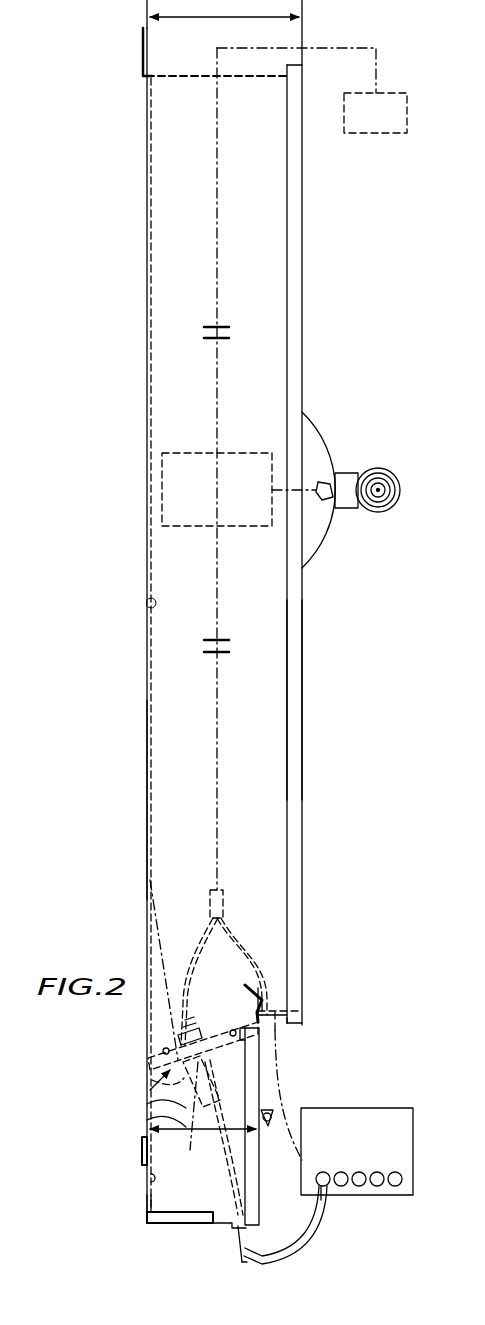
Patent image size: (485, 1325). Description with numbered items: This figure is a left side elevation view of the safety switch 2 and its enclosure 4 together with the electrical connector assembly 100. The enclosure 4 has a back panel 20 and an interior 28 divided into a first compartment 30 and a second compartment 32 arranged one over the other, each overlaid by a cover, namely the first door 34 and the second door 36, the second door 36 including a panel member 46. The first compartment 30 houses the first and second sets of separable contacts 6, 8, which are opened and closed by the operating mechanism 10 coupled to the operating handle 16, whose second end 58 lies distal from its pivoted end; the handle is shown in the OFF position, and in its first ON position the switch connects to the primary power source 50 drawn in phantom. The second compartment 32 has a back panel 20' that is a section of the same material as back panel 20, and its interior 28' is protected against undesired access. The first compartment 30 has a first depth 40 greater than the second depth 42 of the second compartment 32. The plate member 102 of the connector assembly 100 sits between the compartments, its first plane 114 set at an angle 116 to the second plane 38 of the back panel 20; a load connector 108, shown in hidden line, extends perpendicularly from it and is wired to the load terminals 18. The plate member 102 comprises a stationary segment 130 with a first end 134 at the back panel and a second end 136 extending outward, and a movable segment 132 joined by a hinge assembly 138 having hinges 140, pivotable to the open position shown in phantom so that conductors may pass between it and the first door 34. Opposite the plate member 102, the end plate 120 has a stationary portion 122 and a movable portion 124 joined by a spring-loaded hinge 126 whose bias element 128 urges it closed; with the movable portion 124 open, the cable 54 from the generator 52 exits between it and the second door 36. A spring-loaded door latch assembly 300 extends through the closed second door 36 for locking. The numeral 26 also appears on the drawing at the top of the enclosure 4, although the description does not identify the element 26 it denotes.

The safety switch 2 is at (233, 1233).
The enclosure 4 is at (316, 344).
The first set of separable contacts 6 is at (231, 311).
The second set of separable contacts 8 is at (227, 631).
The operating mechanism 10 is at (240, 452).
The operating handle 16 is at (368, 470).
The load terminals 18 is at (224, 895).
The back panel 20 is at (133, 625).
The back panel 20' is at (127, 1156).
The top wall 26 is at (213, 75).
The interior 28 is at (300, 700).
The interior 28' is at (109, 1207).
The first compartment 30 is at (165, 672).
The second compartment 32 is at (148, 1203).
The first cover 34 is at (302, 727).
The second cover 36 is at (308, 1223).
The second plane 38 is at (147, 776).
The first depth 40 is at (211, 20).
The second depth 42 is at (147, 1129).
The panel member 46 is at (260, 1100).
The primary power source 50 is at (409, 113).
The generator 52 is at (403, 1108).
The cable 54 is at (284, 1108).
The second end 58 is at (380, 520).
The electrical connector assembly 100 is at (240, 1062).
The plate member 102 is at (150, 1100).
The load connector 108 is at (190, 1116).
The first plane 114 is at (152, 1060).
The angle 116 is at (147, 1108).
The end plate 120 is at (166, 1225).
The stationary portion 122 is at (185, 1212).
The movable portion 124 is at (250, 1260).
The spring-loaded hinge 126 is at (205, 1241).
The bias element 128 is at (220, 1225).
The stationary segment 130 is at (222, 1032).
The movable segment 132 is at (268, 978).
The first end 134 is at (153, 1038).
The second end 136 is at (248, 1016).
The hinge assembly 138 is at (247, 980).
The hinge 140 is at (287, 1022).
The spring-loaded door latch assembly 300 is at (273, 1137).